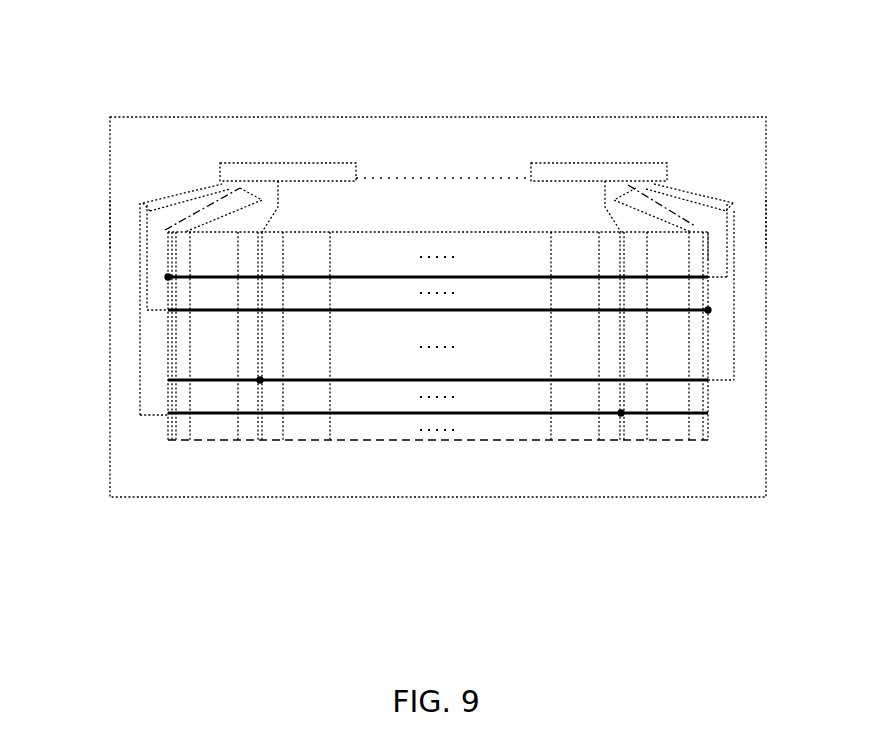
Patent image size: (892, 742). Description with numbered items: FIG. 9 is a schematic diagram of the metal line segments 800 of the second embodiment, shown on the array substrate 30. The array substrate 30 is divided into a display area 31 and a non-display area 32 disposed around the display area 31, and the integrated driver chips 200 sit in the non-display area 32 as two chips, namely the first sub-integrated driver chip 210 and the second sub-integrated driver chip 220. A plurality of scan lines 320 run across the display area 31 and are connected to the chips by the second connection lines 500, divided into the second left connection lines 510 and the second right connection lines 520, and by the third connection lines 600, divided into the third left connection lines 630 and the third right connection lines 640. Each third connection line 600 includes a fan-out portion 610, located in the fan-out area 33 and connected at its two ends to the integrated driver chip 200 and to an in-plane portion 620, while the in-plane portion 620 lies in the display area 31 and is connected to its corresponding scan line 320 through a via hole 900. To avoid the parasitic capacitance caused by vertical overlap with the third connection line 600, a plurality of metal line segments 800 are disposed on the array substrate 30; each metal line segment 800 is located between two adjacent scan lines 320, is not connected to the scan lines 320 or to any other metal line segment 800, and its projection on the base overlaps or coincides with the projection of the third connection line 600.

The integrated driver chip 200 is at (443, 119).
The first sub-integrated driver chip 210 is at (282, 176).
The second sub-integrated driver chip 220 is at (599, 148).
The third connection line 600 is at (416, 147).
The third left connection line 630 is at (185, 228).
The third right connection line 640 is at (673, 193).
The fan-out portion 610 is at (185, 231).
The second connection line 500 is at (438, 433).
The second left connection line 510 is at (141, 250).
The second right connection line 520 is at (737, 226).
The fan-out area 33 is at (738, 233).
The via hole 900 is at (165, 288).
The scan line 320 is at (210, 315).
The in-plane portion 620 is at (168, 345).
The metal line segment 800 is at (168, 402).
The array substrate 30 is at (472, 390).
The display area 31 is at (434, 441).
The non-display area 32 is at (765, 426).